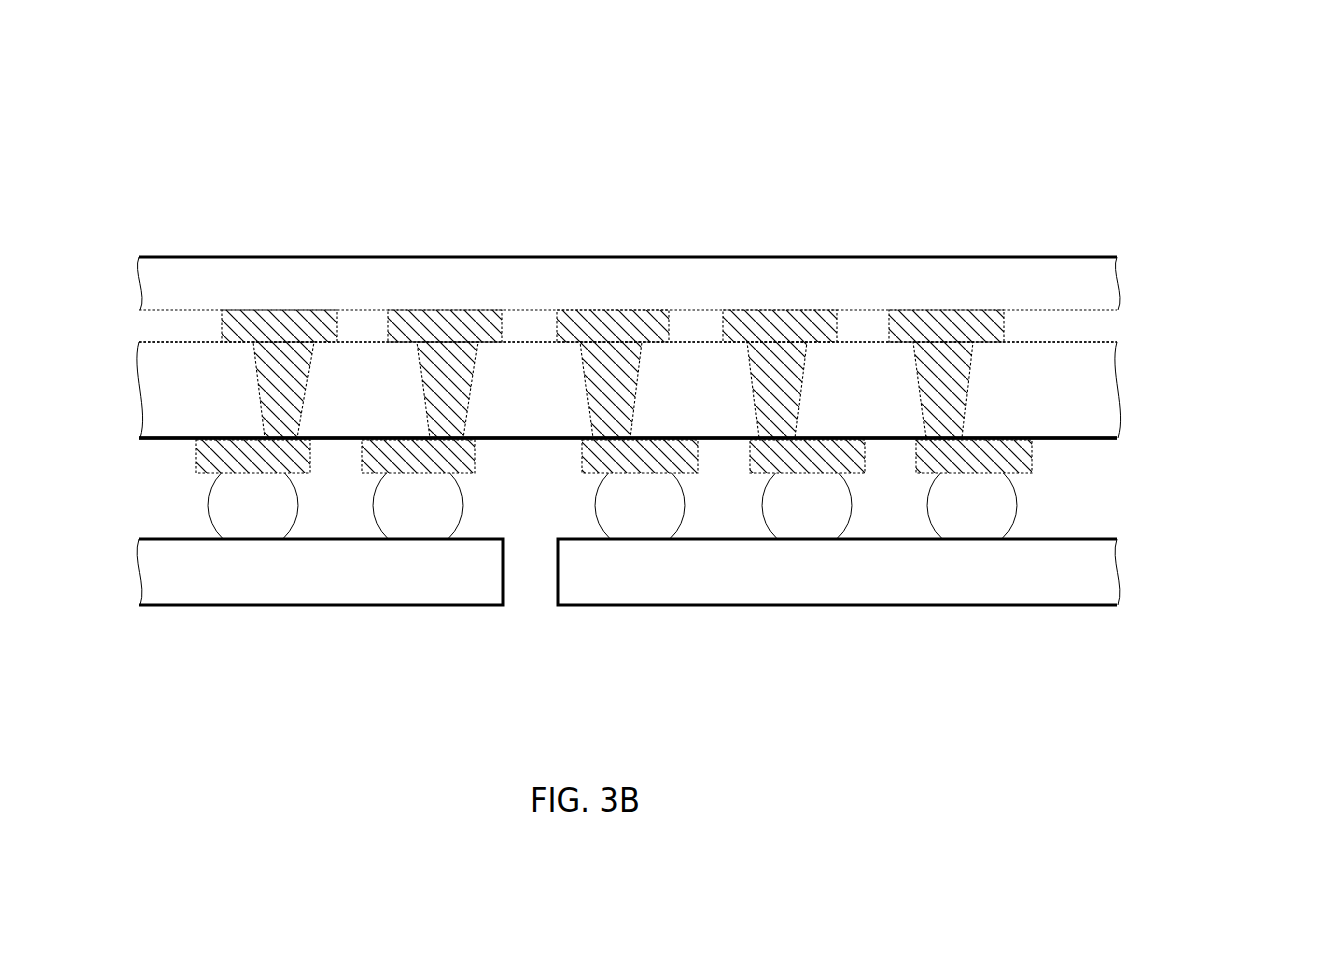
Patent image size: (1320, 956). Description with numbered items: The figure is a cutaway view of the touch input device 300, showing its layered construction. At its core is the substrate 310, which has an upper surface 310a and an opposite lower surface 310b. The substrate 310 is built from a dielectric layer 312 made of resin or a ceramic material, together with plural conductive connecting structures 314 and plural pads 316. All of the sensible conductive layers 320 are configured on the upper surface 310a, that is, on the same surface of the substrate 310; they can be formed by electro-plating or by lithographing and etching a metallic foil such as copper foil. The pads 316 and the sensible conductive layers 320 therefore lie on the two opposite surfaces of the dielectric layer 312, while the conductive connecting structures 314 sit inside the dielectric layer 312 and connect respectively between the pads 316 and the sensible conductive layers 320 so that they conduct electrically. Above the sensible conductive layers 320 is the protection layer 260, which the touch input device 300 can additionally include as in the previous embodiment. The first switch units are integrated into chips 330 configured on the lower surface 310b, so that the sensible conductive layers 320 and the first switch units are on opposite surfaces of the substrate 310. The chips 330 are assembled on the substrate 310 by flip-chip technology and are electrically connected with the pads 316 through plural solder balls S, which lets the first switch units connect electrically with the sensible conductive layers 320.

The touch input device 300 is at (1091, 742).
The protection layer 260 is at (1088, 288).
The substrate 310 is at (1236, 345).
The dielectric layer 312 is at (1078, 388).
The conductive connecting structure 314 is at (957, 364).
The pad 316 is at (1015, 458).
The upper surface 310a is at (699, 335).
The lower surface 310b is at (723, 448).
The sensible conductive layer 320 is at (583, 310).
The chip 330 is at (240, 572).
The solder ball S is at (228, 510).